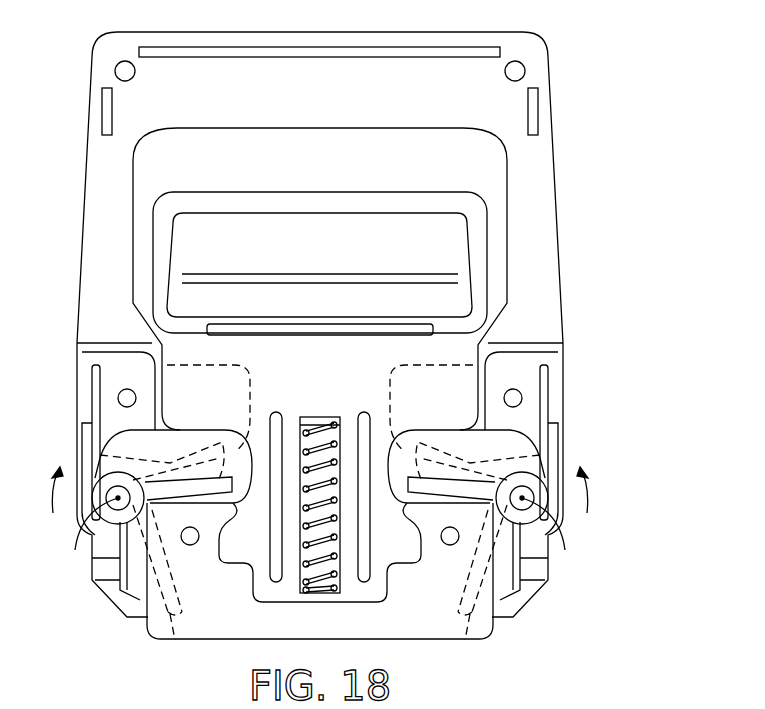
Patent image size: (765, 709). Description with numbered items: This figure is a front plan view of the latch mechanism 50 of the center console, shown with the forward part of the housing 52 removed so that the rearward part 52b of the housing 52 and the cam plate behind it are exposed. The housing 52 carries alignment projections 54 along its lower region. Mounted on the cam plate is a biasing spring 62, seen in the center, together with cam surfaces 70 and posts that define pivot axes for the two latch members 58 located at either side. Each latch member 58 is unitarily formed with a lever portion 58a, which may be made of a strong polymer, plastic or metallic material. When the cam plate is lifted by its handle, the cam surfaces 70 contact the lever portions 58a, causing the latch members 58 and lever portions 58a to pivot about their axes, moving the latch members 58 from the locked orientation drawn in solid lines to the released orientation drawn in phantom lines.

The latch mechanism 50 is at (585, 68).
The housing 52 is at (549, 107).
The rearward part 52b is at (517, 48).
The alignment projections 54 is at (367, 640).
The latch members 58 is at (115, 606).
The lever portion 58a is at (97, 440).
The biasing spring 62 is at (320, 563).
The cam surfaces 70 is at (228, 458).